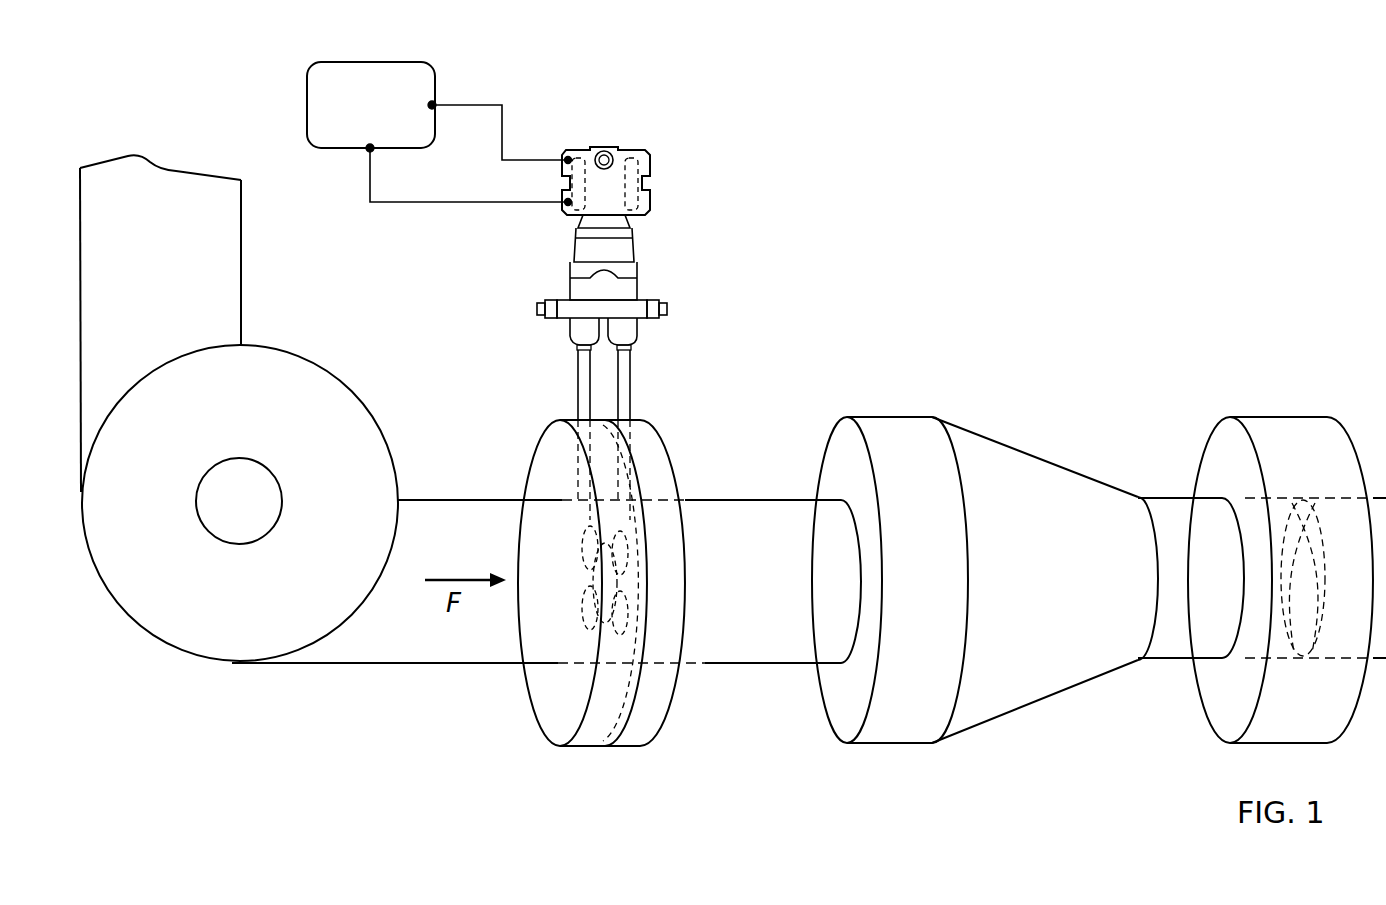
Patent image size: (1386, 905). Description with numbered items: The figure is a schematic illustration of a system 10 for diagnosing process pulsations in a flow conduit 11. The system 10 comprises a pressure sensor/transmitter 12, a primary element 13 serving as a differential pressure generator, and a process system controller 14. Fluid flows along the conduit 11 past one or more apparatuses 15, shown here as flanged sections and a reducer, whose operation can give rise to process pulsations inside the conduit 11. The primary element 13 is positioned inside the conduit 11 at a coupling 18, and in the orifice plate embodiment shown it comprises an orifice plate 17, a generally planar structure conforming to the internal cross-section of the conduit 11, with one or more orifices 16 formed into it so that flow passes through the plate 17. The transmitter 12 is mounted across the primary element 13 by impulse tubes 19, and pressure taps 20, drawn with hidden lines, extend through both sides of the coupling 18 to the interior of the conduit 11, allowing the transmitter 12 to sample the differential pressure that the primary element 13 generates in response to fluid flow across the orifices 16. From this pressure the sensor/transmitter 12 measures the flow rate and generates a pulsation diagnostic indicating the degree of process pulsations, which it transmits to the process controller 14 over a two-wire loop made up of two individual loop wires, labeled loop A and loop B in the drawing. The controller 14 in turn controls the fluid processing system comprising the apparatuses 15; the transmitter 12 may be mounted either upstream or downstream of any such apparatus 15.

The system 10 is at (1110, 148).
The flow conduit 11 is at (387, 653).
The pressure sensor/transmitter 12 is at (625, 147).
The primary element 13 is at (634, 515).
The process system controller 14 is at (312, 67).
The apparatus 15 is at (348, 404).
The orifice 16 is at (594, 610).
The orifice plate 17 is at (593, 637).
The coupling 18 is at (663, 688).
The impulse tubes 19 is at (585, 380).
The pressure taps 20 is at (582, 498).